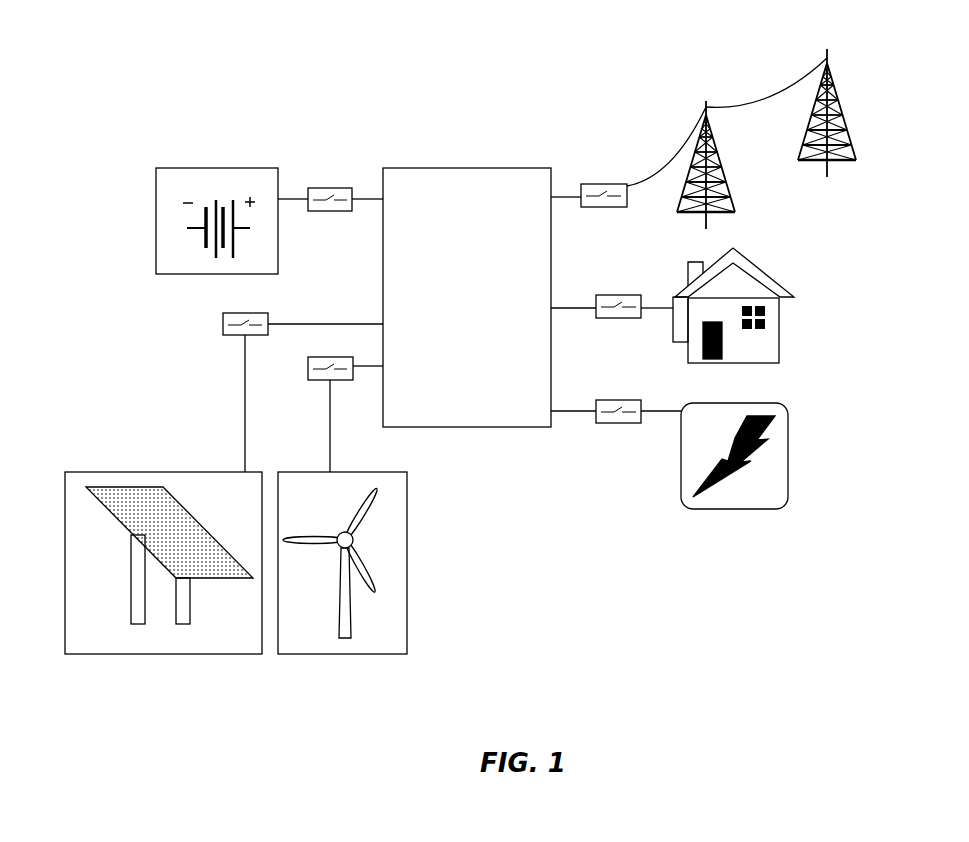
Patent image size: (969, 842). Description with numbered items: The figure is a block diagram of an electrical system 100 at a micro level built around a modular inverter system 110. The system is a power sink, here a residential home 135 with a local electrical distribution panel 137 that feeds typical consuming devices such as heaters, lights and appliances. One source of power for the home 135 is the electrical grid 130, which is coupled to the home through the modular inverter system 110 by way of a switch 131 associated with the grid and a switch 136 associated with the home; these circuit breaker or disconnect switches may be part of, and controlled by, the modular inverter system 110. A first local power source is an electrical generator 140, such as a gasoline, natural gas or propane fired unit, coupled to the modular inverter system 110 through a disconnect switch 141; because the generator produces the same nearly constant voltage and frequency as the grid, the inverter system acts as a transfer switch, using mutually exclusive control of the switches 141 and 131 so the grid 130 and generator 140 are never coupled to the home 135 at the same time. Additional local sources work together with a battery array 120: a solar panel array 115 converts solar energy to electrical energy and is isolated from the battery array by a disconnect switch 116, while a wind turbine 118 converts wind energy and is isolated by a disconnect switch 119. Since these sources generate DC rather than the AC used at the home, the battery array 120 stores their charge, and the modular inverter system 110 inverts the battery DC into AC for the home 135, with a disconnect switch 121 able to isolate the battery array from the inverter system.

The electrical system 100 is at (392, 72).
The modular inverter system 110 is at (450, 343).
The solar panel array 115 is at (141, 665).
The disconnect switch 116 is at (200, 328).
The wind turbine 118 is at (339, 667).
The disconnect switch 119 is at (310, 392).
The battery array 120 is at (264, 156).
The disconnect switch 121 is at (351, 172).
The electrical grid 130 is at (729, 78).
The switch 131 is at (615, 170).
The residential home 135 is at (766, 310).
The switch 136 is at (637, 280).
The local electrical distribution panel 137 is at (679, 350).
The electrical generator 140 is at (688, 520).
The disconnect switch 141 is at (640, 380).